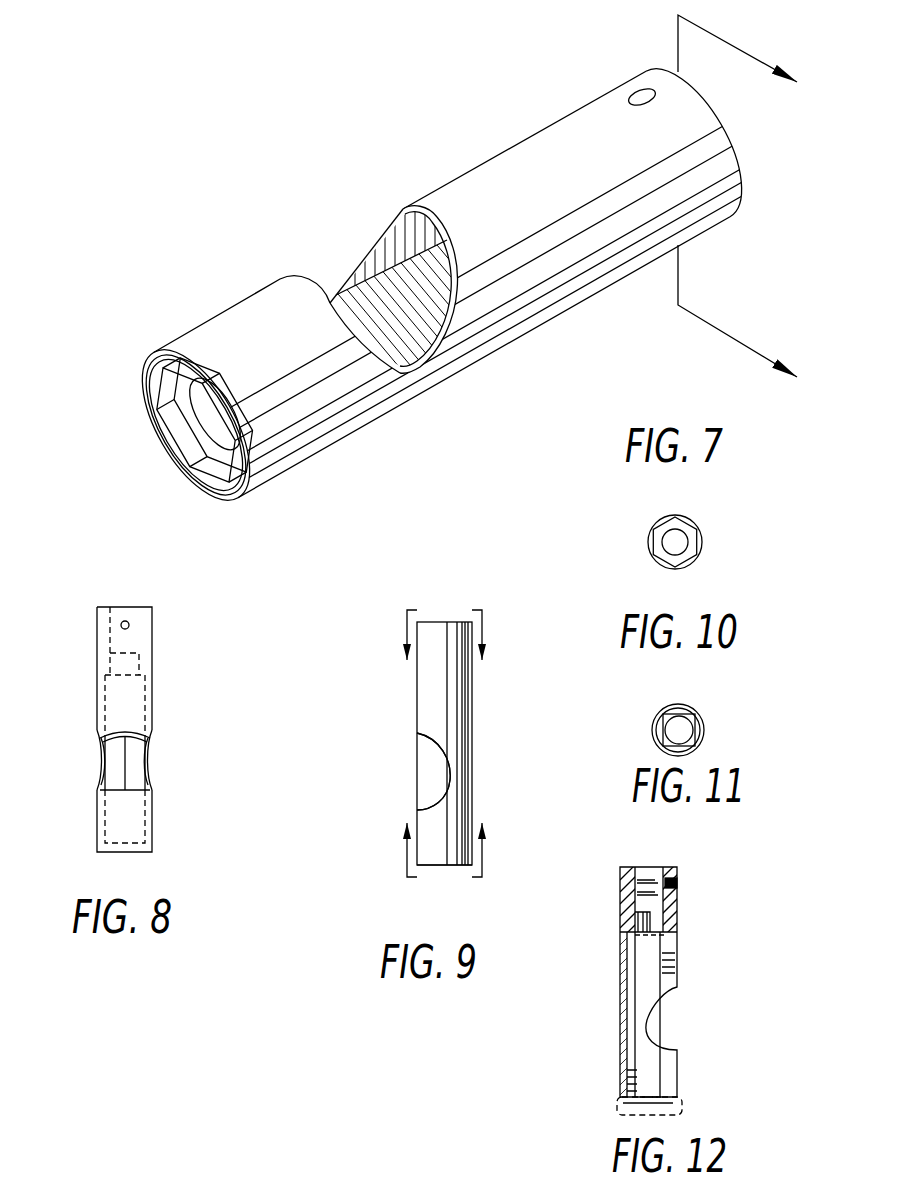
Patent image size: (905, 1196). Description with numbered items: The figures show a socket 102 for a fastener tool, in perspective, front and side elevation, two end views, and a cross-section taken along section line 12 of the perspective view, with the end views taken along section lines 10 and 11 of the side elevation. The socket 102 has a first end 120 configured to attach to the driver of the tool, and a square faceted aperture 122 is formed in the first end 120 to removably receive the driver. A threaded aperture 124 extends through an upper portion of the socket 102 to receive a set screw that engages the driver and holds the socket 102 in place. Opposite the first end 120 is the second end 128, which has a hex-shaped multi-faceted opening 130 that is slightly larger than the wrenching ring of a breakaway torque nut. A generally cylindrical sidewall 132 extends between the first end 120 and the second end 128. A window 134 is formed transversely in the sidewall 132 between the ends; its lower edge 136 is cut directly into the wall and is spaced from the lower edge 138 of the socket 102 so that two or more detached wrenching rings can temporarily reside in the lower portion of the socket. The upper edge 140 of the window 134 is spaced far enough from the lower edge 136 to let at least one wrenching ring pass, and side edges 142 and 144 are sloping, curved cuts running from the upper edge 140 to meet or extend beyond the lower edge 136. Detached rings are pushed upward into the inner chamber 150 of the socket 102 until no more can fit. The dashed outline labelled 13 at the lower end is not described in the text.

In FIG. 7, the socket 102 is at (484, 110).
In FIG. 8, the socket 102 is at (185, 690).
In FIG. 9, the socket 102 is at (373, 688).
In FIG. 12, the socket 102 is at (713, 958).
In FIG. 9, the first end 120 is at (447, 622).
In FIG. 11, the first end 120 is at (663, 732).
In FIG. 12, the first end 120 is at (627, 902).
In FIG. 11, the faceted aperture 122 is at (682, 728).
In FIG. 7, the threaded aperture 124 is at (638, 95).
In FIG. 8, the threaded aperture 124 is at (125, 625).
In FIG. 12, the threaded aperture 124 is at (677, 890).
In FIG. 7, the second end 128 is at (204, 420).
In FIG. 9, the second end 128 is at (458, 867).
In FIG. 10, the second end 128 is at (653, 540).
In FIG. 12, the second end 128 is at (623, 1103).
In FIG. 10, the multi-faceted opening 130 is at (687, 535).
In FIG. 7, the sidewall 132 is at (477, 182).
In FIG. 9, the sidewall 132 is at (467, 688).
In FIG. 7, the window 134 is at (378, 287).
In FIG. 9, the window 134 is at (425, 778).
In FIG. 7, the lower edge of the window 136 is at (331, 305).
In FIG. 8, the lower edge of the window 136 is at (128, 790).
In FIG. 9, the lower edge of the window 136 is at (433, 805).
In FIG. 9, the lower edge of the socket 138 is at (435, 860).
In FIG. 7, the upper edge of the window 140 is at (448, 240).
In FIG. 8, the upper edge of the window 140 is at (110, 735).
In FIG. 9, the upper edge of the window 140 is at (420, 742).
In FIG. 7, the side edge of the window 142 is at (407, 358).
In FIG. 8, the side edge of the window 142 is at (148, 760).
In FIG. 7, the side edge of the window 144 is at (342, 287).
In FIG. 8, the side edge of the window 144 is at (100, 760).
In FIG. 12, the inner chamber 150 is at (650, 1087).
In FIG. 12, the hex end 13 is at (677, 1103).
In FIG. 7, the section line 12- 12 is at (749, 201).
In FIG. 9, the section line 11- 11 is at (446, 633).
In FIG. 9, the section line 10- 10 is at (445, 853).